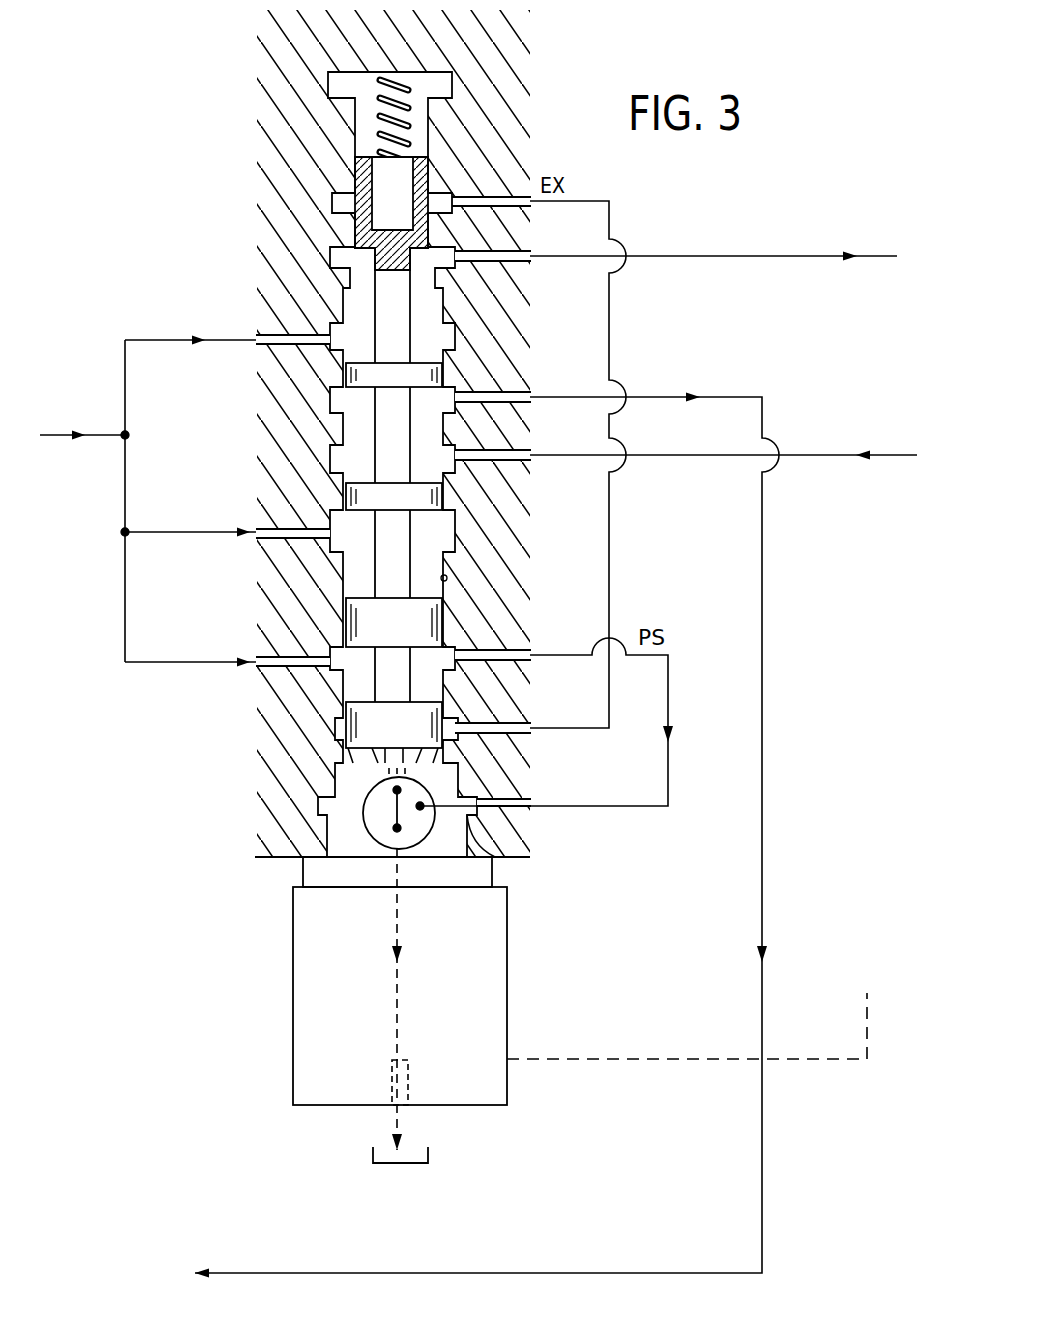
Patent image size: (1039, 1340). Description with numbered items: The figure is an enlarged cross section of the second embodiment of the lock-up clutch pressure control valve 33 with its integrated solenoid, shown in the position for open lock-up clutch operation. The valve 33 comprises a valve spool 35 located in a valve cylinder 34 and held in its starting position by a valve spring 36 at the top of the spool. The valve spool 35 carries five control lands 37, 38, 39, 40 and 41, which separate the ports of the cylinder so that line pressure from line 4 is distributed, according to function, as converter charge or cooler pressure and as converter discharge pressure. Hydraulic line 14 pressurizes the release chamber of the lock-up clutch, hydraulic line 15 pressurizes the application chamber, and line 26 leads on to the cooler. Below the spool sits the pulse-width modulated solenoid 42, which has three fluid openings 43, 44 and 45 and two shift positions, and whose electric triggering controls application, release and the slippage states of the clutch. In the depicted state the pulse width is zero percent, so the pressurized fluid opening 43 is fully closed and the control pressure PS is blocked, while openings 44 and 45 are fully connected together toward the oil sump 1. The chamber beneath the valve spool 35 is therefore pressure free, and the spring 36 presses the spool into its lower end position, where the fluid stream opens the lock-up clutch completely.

The sump 1 is at (428, 1155).
The line 4 is at (108, 432).
The hydraulic line 14 is at (881, 255).
The hydraulic line 15 is at (892, 455).
The line 26 is at (558, 822).
The lock-up clutch pressure control valve 33 is at (245, 688).
The valve cylinder 34 is at (447, 578).
The valve spool 35 is at (400, 313).
The valve spring 36 is at (380, 115).
The control land 37 is at (355, 178).
The control land 38 is at (352, 374).
The control land 39 is at (352, 497).
The control land 40 is at (358, 622).
The control land 41 is at (358, 733).
The pulse-width modulated solenoid 42 is at (492, 953).
The fluid opening 43 is at (498, 858).
The fluid opening 44 is at (390, 771).
The fluid opening 45 is at (392, 1087).